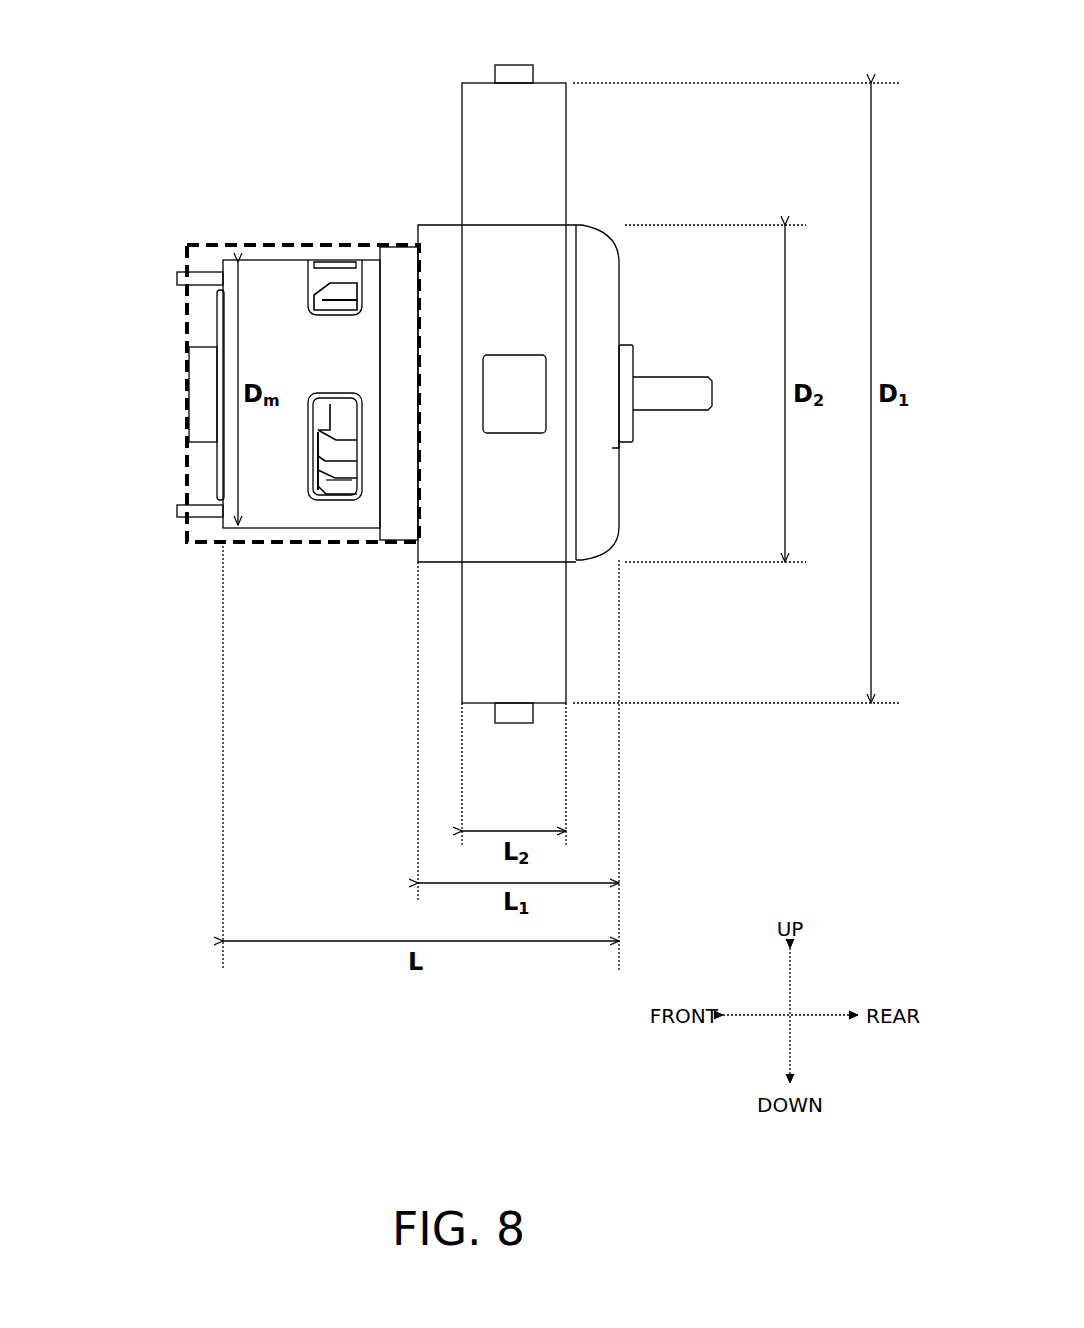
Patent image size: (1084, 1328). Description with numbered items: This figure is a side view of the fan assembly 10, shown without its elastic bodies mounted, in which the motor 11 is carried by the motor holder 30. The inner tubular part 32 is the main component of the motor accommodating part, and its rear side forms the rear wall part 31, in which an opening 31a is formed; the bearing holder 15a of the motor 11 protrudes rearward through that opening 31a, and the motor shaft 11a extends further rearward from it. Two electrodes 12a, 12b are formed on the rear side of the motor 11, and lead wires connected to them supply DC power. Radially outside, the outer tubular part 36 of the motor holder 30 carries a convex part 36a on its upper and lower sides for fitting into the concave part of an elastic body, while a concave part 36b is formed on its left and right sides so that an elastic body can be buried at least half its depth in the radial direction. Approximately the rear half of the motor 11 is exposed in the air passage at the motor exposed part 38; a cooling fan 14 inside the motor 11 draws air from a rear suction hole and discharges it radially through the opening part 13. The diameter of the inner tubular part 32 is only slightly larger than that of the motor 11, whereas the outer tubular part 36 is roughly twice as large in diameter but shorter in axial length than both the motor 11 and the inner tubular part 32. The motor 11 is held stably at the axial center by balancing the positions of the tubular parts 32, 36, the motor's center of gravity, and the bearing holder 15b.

The fan assembly 10 is at (245, 115).
The motor 11 is at (265, 275).
The motor shaft 11a is at (680, 385).
The electrode 12a is at (177, 282).
The electrode 12b is at (177, 511).
The opening part 13 is at (314, 458).
The cooling fan 14 is at (334, 492).
The bearing holder 15a is at (628, 428).
The bearing holder 15b is at (205, 395).
The motor holder 30 is at (462, 148).
The rear wall part 31 is at (612, 480).
The opening 31a is at (624, 450).
The inner tubular part 32 is at (455, 555).
The outer tubular part 36 is at (545, 153).
The convex part 36a is at (528, 382).
The concave part 36b is at (512, 75).
The motor exposed part 38 is at (205, 548).